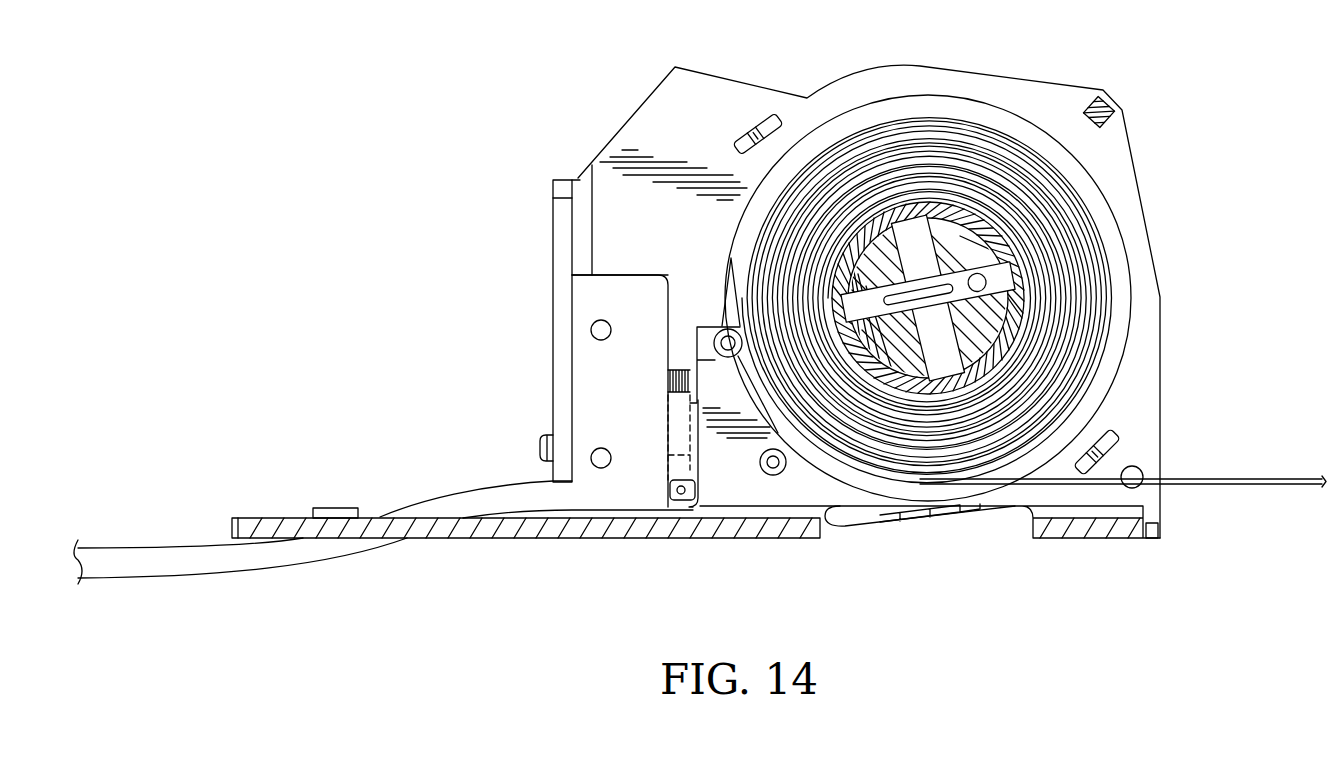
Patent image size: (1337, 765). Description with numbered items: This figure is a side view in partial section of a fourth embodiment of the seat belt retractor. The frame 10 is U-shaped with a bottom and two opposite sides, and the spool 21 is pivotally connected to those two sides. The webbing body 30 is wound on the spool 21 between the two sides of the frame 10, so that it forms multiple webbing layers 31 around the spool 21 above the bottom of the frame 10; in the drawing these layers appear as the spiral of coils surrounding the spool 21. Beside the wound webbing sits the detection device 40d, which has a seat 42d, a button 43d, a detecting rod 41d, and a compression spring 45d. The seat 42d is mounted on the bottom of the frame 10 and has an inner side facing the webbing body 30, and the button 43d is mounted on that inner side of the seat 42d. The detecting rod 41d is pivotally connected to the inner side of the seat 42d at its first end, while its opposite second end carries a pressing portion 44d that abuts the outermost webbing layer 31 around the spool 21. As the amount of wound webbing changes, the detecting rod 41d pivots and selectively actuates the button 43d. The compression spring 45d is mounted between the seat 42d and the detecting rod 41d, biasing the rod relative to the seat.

The frame 10 is at (650, 137).
The detection device 40d is at (636, 257).
The seat 42d is at (600, 412).
The compression spring 45d is at (668, 380).
The button 43d is at (670, 473).
The detecting rod 41d is at (718, 437).
The pressing portion 44d is at (733, 275).
The webbing body 30 is at (1003, 113).
The webbing layers 31 is at (1085, 205).
The spool 21 is at (1020, 298).